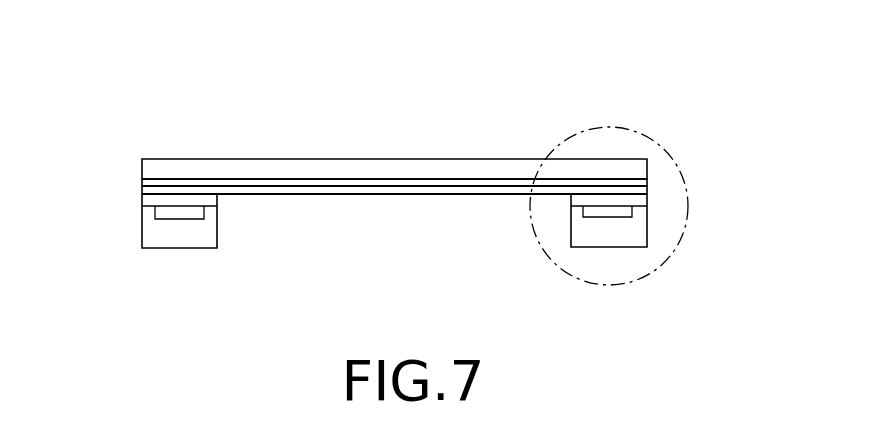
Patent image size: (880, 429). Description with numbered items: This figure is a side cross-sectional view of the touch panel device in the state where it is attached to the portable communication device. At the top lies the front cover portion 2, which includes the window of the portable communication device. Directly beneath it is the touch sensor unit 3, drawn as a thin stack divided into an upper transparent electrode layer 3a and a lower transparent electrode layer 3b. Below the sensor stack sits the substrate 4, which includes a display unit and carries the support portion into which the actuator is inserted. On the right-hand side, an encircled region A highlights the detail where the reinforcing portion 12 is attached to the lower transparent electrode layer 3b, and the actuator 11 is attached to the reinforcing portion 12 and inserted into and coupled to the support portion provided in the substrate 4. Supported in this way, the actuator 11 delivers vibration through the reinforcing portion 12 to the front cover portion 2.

The front cover portion 2 is at (256, 168).
The touch sensor unit 3 is at (52, 152).
The upper transparent electrode layer 3a is at (142, 183).
The lower transparent electrode layer 3b is at (142, 193).
The substrate 4 is at (182, 240).
The actuator 11 is at (630, 210).
The reinforcing portion 12 is at (644, 200).
The enlarged region A is at (613, 127).